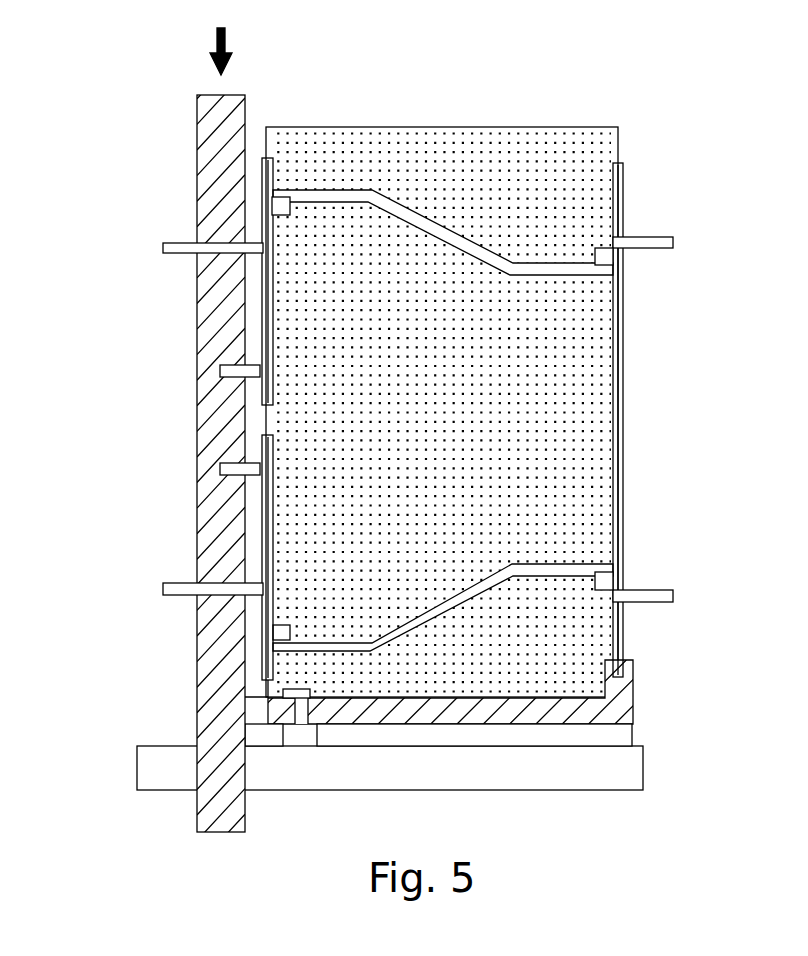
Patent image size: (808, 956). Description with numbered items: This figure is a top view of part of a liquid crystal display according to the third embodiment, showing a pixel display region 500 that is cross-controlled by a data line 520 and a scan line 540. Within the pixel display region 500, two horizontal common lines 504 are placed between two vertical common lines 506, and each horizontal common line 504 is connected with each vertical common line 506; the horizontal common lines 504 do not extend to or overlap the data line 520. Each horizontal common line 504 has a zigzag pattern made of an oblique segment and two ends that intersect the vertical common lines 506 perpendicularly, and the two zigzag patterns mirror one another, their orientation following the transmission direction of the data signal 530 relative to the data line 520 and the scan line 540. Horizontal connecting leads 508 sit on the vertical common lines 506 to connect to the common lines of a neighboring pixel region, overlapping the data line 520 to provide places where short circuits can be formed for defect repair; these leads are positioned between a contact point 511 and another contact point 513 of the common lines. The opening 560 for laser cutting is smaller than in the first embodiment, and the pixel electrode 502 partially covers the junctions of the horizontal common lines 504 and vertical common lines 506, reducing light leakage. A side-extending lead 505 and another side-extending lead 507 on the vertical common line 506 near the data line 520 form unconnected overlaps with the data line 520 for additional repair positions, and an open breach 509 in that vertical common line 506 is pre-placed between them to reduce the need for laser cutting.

The pixel display region 500 is at (562, 127).
The pixel electrode 502 is at (448, 155).
The horizontal common line 504 is at (473, 240).
The side-extending lead 505 is at (260, 355).
The vertical common line 506 is at (624, 397).
The side-extending lead 507 is at (260, 476).
The horizontal connecting lead 508 is at (163, 248).
The open breach 509 is at (260, 418).
The contact point 511 is at (276, 191).
The contact point 513 is at (283, 653).
The data line 520 is at (197, 122).
The data signal 530 is at (226, 43).
The scan line 540 is at (645, 765).
The opening 560 is at (293, 210).